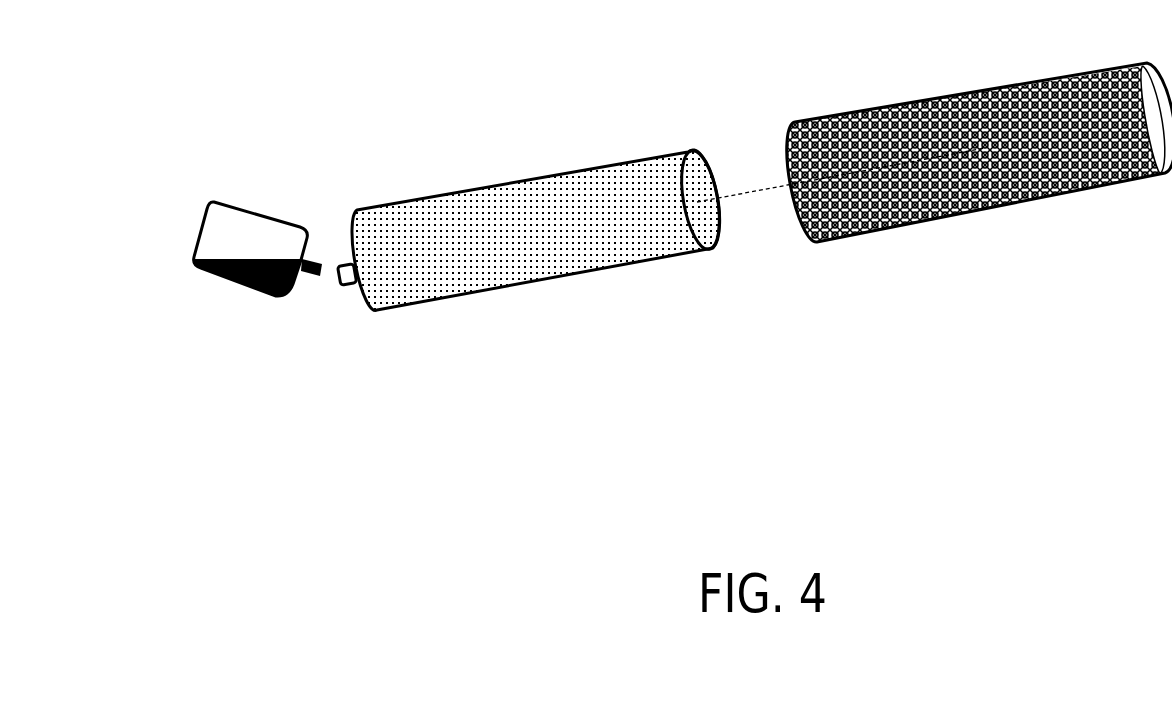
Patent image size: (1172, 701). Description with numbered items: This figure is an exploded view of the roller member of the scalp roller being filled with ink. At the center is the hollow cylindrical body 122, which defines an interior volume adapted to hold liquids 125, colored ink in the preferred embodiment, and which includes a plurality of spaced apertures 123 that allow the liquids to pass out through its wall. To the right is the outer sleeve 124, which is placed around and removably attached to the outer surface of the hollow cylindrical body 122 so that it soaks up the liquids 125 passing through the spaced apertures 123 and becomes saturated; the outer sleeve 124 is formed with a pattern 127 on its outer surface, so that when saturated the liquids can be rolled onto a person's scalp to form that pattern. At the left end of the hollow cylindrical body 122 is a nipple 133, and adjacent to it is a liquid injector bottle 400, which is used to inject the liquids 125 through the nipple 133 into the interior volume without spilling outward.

The liquid injector bottle 400 is at (209, 195).
The hollow cylindrical body 122 is at (494, 177).
The plurality of spaced apertures 123 is at (518, 254).
The outer sleeve 124 is at (874, 101).
The pattern 127 is at (884, 207).
The liquids 125 is at (235, 291).
The nipple 133 is at (344, 294).